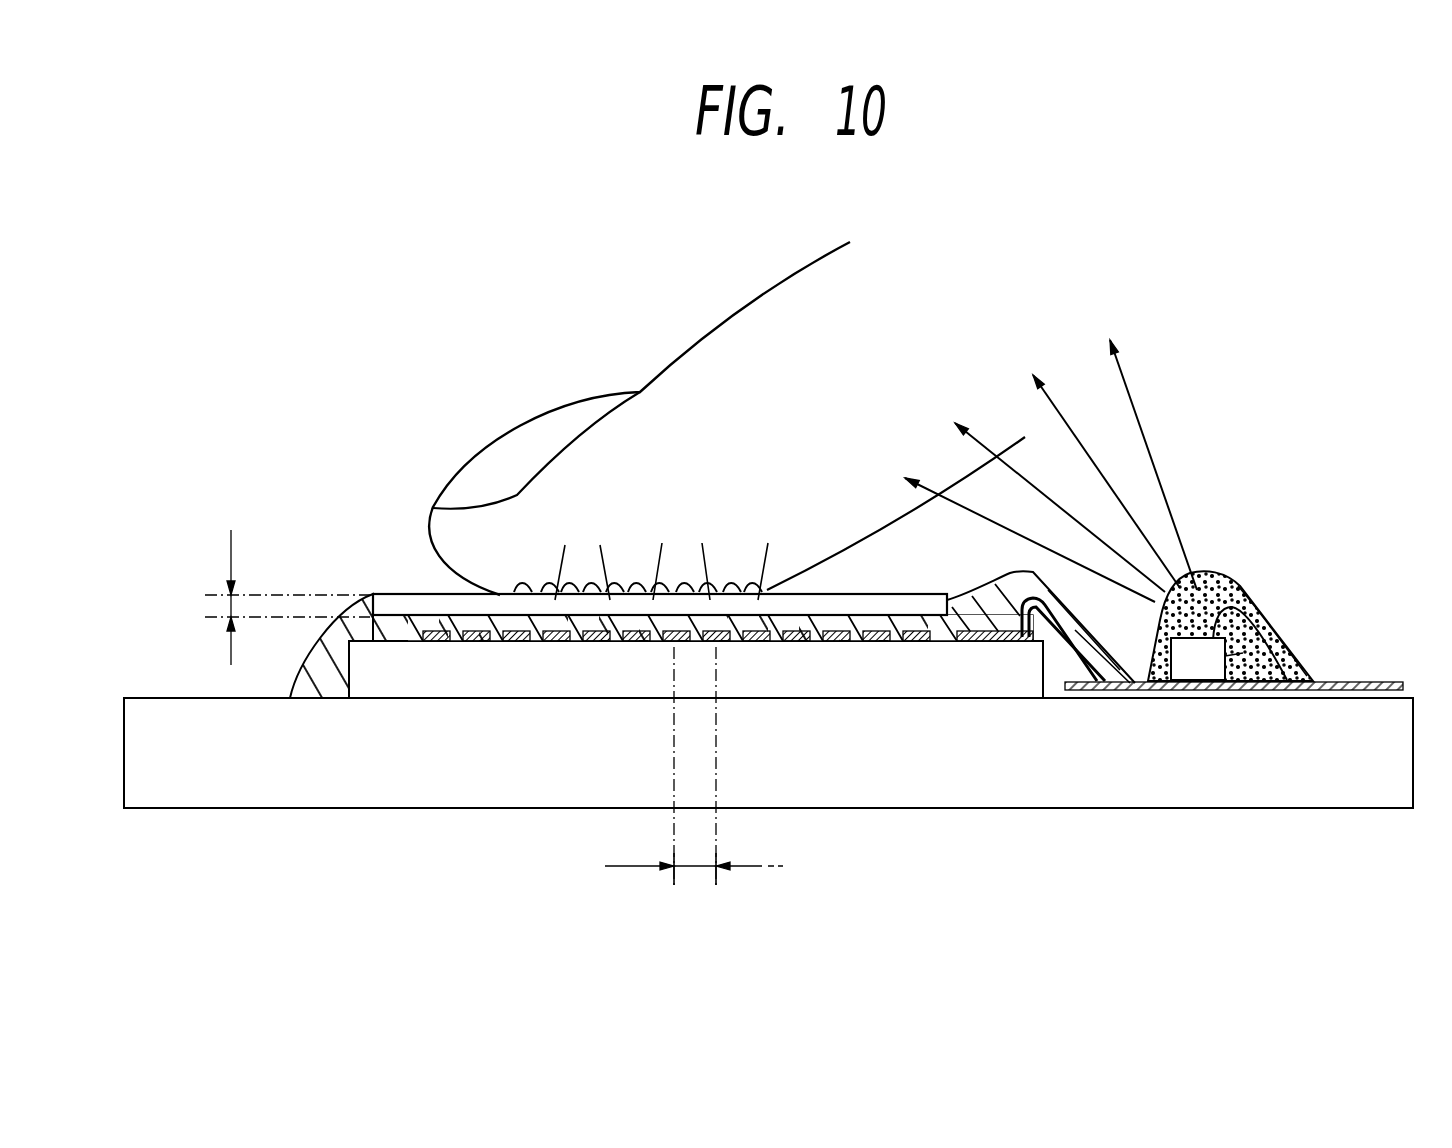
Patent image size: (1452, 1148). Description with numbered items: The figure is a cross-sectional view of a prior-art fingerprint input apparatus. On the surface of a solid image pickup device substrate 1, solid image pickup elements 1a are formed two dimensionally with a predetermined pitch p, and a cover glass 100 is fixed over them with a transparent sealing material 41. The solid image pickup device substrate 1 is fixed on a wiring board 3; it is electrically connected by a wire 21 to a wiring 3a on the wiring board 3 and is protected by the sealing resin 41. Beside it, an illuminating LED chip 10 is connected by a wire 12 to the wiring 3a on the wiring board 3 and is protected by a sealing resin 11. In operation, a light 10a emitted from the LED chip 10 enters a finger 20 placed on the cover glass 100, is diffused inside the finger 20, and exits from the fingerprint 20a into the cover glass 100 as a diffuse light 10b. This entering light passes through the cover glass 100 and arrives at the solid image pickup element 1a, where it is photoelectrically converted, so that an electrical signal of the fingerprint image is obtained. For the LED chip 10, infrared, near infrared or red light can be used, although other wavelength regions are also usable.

The solid image pickup device substrate 1 is at (383, 678).
The solid image pickup elements 1a is at (438, 642).
The wiring board 3 is at (848, 777).
The wiring 3a is at (1378, 679).
The illuminating LED chip 10 is at (1282, 623).
The light 10a is at (1133, 405).
The diffuse light 10b is at (563, 592).
The sealing resin 11 is at (1219, 571).
The wire 12 is at (1245, 593).
The finger 20 is at (707, 358).
The fingerprint 20a is at (638, 580).
The wire 21 is at (1041, 645).
The transparent sealing material 41 is at (1130, 690).
The cover glass 100 is at (403, 598).
The predetermined pitch p is at (694, 775).